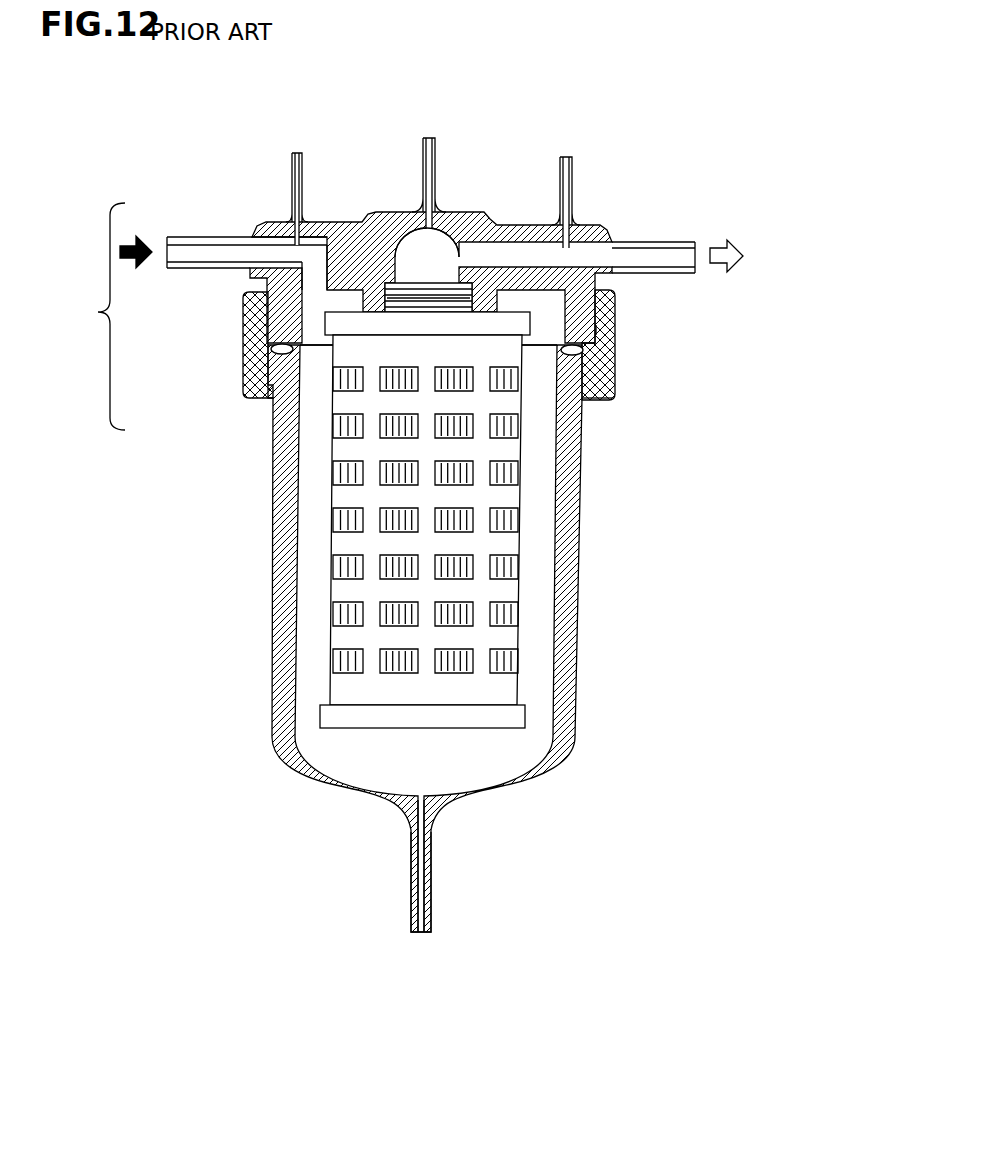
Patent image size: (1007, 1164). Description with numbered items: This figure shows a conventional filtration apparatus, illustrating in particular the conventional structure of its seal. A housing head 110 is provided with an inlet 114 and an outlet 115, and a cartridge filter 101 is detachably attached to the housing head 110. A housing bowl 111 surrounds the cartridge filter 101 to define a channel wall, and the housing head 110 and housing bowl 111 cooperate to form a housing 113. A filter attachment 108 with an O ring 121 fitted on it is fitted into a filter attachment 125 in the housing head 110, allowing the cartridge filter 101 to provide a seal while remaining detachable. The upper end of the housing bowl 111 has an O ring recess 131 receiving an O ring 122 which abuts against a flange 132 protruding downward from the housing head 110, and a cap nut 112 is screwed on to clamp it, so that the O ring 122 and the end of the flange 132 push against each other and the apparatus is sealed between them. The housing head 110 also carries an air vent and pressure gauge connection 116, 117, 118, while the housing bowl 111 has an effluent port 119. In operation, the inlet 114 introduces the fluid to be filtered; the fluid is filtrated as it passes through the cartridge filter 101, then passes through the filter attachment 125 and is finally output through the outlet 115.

The cartridge filter 101 is at (507, 545).
The filter attachment 108 is at (411, 289).
The housing head 110 is at (605, 210).
The housing bowl 111 is at (273, 565).
The cap nut 112 is at (243, 378).
The housing 113 is at (98, 327).
The inlet 114 is at (165, 252).
The outlet 115 is at (697, 243).
The air vent and pressure gauge connection 116 is at (297, 152).
The air vent and pressure gauge connection 117 is at (429, 136).
The air vent and pressure gauge connection 118 is at (566, 157).
The effluent port 119 is at (421, 932).
The O ring 121 is at (434, 290).
The O ring 122 is at (603, 357).
The filter attachment 125 is at (455, 243).
The O ring recess 131 is at (615, 390).
The flange 132 is at (600, 330).